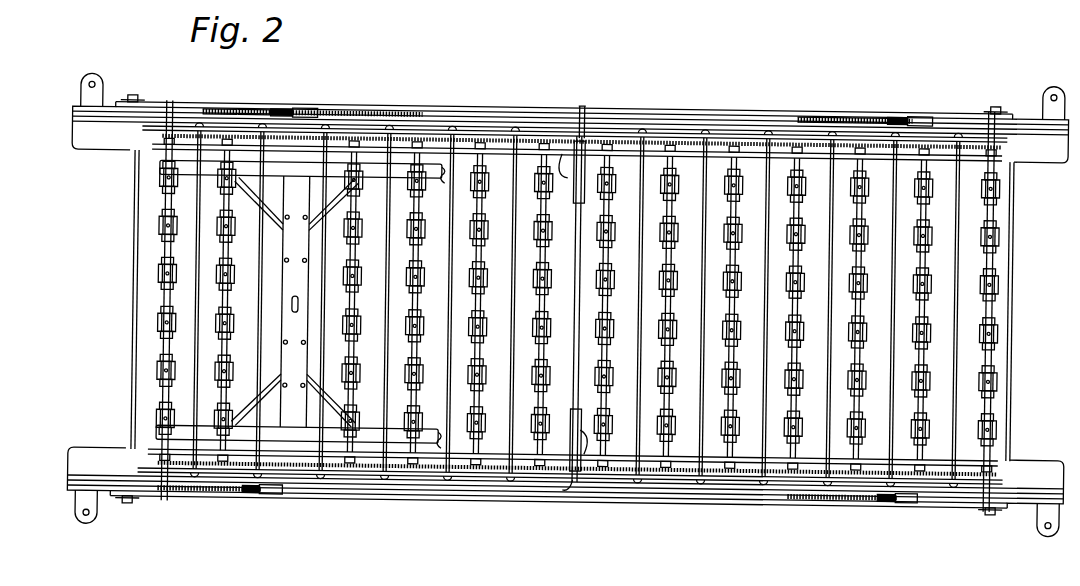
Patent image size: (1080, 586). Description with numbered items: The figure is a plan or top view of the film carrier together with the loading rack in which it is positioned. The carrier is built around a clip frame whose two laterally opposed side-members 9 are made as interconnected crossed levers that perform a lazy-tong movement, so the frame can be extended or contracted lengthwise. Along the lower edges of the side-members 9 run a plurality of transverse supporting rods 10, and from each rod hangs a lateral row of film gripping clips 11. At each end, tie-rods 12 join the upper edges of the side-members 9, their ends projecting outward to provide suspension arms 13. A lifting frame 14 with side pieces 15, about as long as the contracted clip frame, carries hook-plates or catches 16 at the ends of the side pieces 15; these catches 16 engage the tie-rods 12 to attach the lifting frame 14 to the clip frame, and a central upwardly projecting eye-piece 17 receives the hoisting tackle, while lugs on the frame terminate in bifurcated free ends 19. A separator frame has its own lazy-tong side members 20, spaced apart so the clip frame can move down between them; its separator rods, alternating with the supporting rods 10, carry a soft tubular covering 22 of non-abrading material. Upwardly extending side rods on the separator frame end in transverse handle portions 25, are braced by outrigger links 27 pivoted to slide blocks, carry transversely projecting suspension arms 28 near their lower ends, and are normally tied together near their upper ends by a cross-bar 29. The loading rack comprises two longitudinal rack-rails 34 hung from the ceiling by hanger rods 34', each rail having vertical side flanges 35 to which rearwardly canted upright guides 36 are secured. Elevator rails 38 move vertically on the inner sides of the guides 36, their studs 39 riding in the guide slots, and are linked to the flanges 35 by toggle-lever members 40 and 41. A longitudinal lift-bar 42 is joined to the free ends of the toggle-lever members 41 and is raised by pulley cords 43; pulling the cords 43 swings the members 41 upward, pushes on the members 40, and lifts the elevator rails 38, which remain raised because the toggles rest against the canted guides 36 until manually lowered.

The longitudinally extensible side-members 9 is at (470, 146).
The transverse supporting rods 10 is at (486, 213).
The film gripping devices or clips 11 is at (420, 300).
The tie-rods 12 is at (158, 250).
The suspension arms 13 is at (172, 108).
The lifting frame 14 is at (295, 253).
The side pieces 15 is at (200, 183).
The hook-plates or catches 16 is at (158, 167).
The eye-piece 17 is at (295, 312).
The indented or bifurcated free ends 19 is at (300, 176).
The longitudinally extensible side members 20 is at (508, 134).
The tubular covering 22 is at (132, 286).
The transverse handle portion 25 is at (560, 148).
The outrigger links 27 is at (428, 126).
The suspension arms 28 is at (584, 104).
The cross-bar 29 is at (574, 312).
The rack-rails 34 is at (556, 305).
The hanger rods 34' is at (571, 317).
The vertical side flanges 35 is at (72, 118).
The upright guides 36 is at (305, 106).
The elevator rails 38 is at (305, 110).
The studs 39 is at (280, 106).
The toggle-lever member 40 is at (248, 108).
The toggle-lever member 41 is at (215, 108).
The lift-bar 42 is at (228, 109).
The pulley cords 43 is at (133, 96).